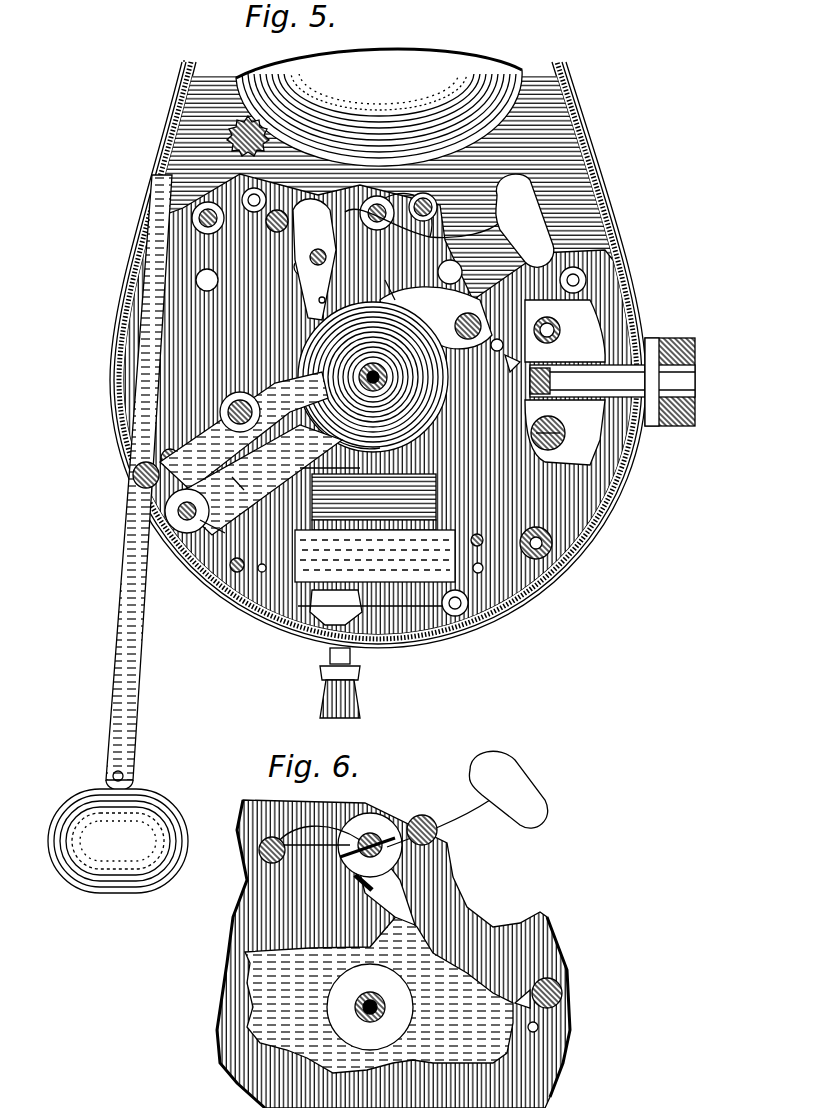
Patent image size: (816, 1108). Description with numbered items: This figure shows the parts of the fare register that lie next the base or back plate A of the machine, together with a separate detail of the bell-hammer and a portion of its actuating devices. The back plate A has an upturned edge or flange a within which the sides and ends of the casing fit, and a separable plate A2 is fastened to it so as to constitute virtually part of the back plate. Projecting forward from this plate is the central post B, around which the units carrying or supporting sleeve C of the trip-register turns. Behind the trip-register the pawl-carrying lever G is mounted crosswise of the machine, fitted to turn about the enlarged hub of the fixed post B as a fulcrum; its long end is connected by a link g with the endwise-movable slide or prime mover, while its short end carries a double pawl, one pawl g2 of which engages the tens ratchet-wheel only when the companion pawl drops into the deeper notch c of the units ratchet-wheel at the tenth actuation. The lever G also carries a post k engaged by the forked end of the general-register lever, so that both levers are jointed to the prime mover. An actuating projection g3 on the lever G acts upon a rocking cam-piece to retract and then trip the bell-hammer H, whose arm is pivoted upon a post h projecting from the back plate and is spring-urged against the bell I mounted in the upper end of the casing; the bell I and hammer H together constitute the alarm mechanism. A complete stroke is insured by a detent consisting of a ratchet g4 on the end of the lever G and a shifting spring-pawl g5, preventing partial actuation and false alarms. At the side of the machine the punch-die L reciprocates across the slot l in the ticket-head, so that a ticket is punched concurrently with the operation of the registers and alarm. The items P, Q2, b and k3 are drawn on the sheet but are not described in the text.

In FIG. 5, the back plate A is at (182, 160).
In FIG. 5, the separable plate A2 is at (385, 437).
In FIG. 6, the separable plate A2 is at (393, 954).
In FIG. 5, the upturned edge or flange a is at (598, 245).
In FIG. 5, the bell I is at (379, 83).
In FIG. 5, the star wheel P is at (236, 127).
In FIG. 5, the pendulum bob Q2 is at (118, 841).
In FIG. 5, the bell-hammer H is at (525, 220).
In FIG. 6, the bell-hammer H is at (508, 789).
In FIG. 5, the post h is at (422, 210).
In FIG. 6, the post h is at (381, 838).
In FIG. 5, the link g is at (163, 381).
In FIG. 5, the pawl g2 is at (436, 305).
In FIG. 5, the actuating projection g3 is at (381, 281).
In FIG. 6, the actuating projection g3 is at (405, 920).
In FIG. 5, the ratchet g4 is at (500, 335).
In FIG. 6, the ratchet g4 is at (520, 1022).
In FIG. 5, the shifting spring-pawl g5 is at (514, 369).
In FIG. 6, the shifting spring-pawl g5 is at (538, 988).
In FIG. 5, the units carrying sleeve C is at (378, 398).
In FIG. 5, the central post B is at (380, 377).
In FIG. 6, the central post B is at (378, 1007).
In FIG. 5, the deep notch c is at (351, 350).
In FIG. 5, the stud b is at (444, 428).
In FIG. 5, the pawl-carrying lever G is at (251, 453).
In FIG. 6, the pawl-carrying lever G is at (379, 992).
In FIG. 5, the post k is at (240, 412).
In FIG. 5, the arm k3 is at (221, 427).
In FIG. 5, the punch-die L is at (595, 382).
In FIG. 5, the slot l is at (658, 418).